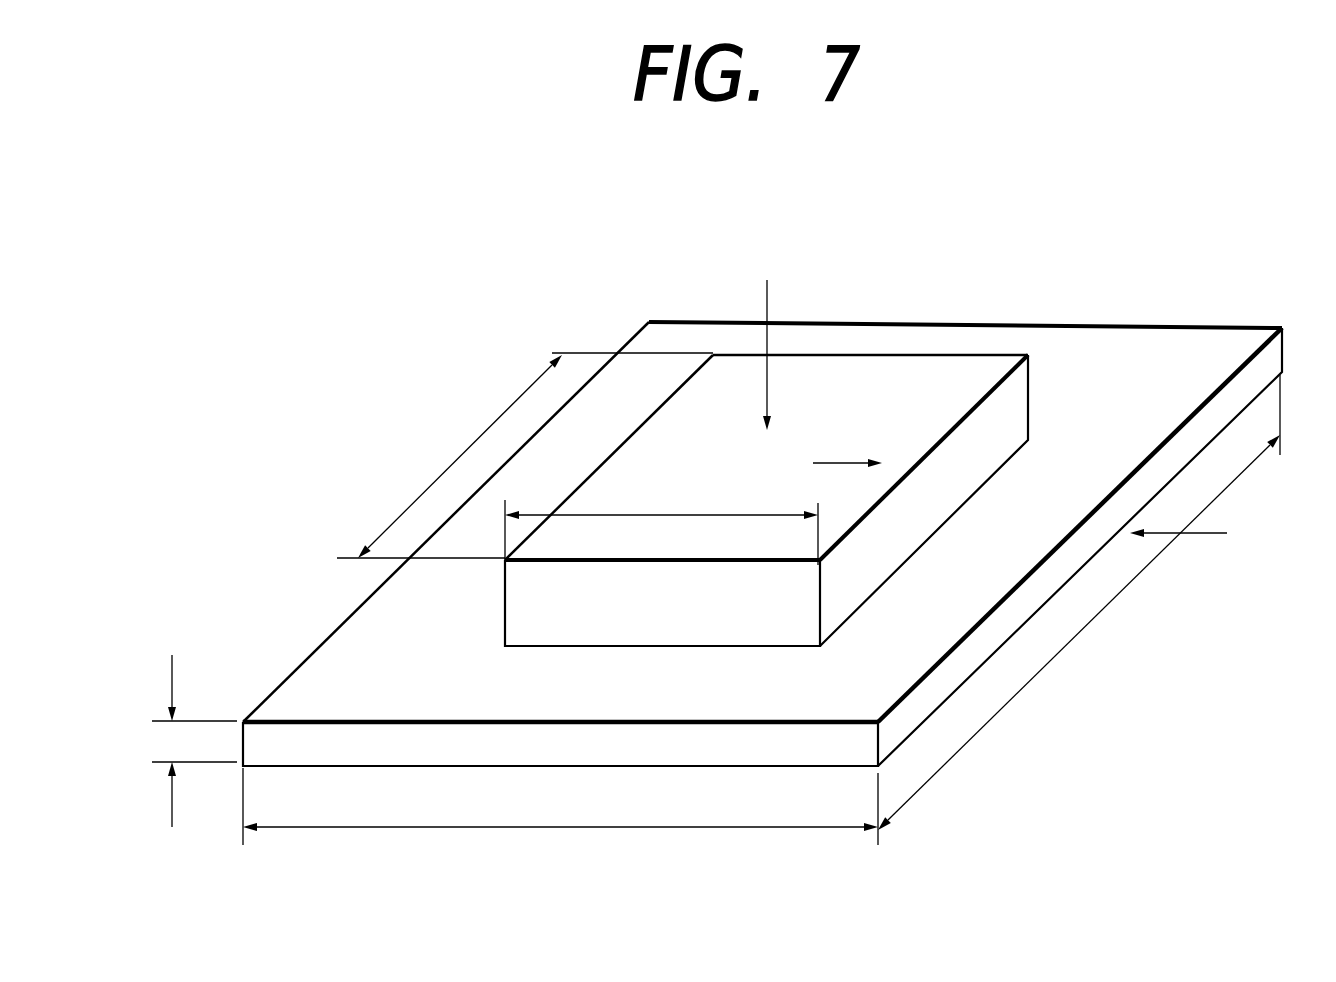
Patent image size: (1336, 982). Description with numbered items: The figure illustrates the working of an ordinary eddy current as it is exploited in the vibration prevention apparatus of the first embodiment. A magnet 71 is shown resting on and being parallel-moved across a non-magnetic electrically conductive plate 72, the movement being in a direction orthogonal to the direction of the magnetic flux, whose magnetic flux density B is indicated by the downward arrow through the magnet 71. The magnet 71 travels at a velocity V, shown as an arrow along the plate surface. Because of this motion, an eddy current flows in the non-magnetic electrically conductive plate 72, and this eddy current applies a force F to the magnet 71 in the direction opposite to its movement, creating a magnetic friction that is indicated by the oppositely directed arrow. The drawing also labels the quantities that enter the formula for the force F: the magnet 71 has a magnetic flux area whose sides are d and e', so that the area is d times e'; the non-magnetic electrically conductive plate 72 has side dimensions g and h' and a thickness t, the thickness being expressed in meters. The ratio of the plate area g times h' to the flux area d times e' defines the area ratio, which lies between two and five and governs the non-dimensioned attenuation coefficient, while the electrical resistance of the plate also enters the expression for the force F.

The magnet 71 is at (933, 365).
The non-magnetic electrically conductive plate 72 is at (1156, 343).
The magnetic flux density B is at (794, 315).
The velocity V is at (876, 426).
The force F is at (1191, 534).
The magnetic flux area dimension d is at (661, 521).
The magnetic flux area dimension e' is at (525, 455).
The plate dimension g is at (560, 817).
The plate dimension h' is at (1079, 602).
The thickness t is at (185, 741).